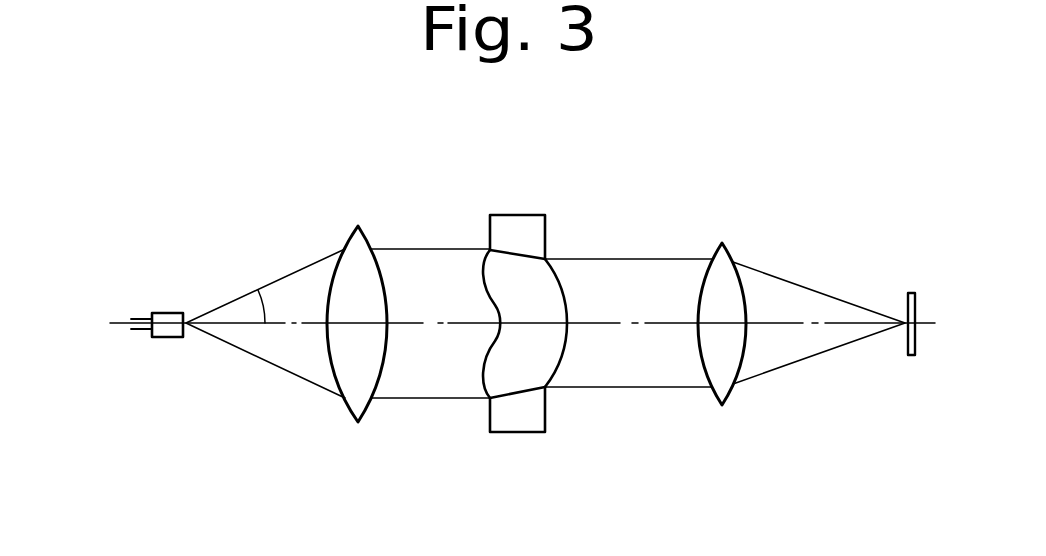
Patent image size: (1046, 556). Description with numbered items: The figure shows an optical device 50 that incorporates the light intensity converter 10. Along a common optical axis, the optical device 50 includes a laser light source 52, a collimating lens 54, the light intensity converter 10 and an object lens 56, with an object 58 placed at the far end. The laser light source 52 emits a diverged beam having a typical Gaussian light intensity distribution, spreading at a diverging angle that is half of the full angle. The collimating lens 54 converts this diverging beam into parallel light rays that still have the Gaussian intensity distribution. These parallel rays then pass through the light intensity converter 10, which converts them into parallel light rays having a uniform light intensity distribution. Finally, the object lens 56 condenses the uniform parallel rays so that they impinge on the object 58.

The light intensity converter 10 is at (520, 230).
The optical device 50 is at (597, 177).
The laser light source 52 is at (168, 333).
The collimating lens 54 is at (355, 405).
The object lens 56 is at (718, 393).
The object 58 is at (907, 348).